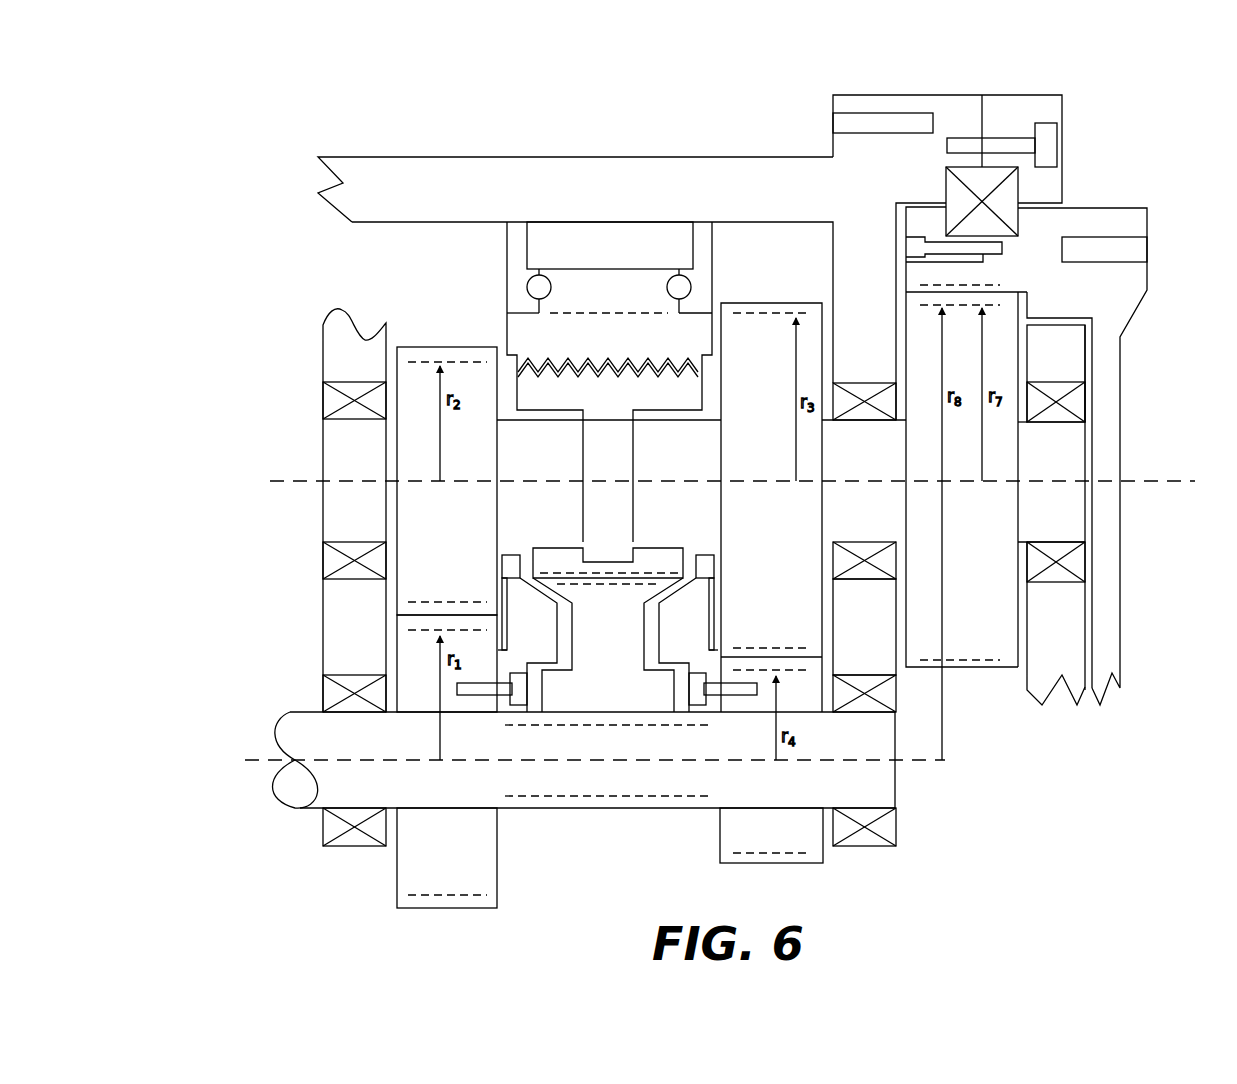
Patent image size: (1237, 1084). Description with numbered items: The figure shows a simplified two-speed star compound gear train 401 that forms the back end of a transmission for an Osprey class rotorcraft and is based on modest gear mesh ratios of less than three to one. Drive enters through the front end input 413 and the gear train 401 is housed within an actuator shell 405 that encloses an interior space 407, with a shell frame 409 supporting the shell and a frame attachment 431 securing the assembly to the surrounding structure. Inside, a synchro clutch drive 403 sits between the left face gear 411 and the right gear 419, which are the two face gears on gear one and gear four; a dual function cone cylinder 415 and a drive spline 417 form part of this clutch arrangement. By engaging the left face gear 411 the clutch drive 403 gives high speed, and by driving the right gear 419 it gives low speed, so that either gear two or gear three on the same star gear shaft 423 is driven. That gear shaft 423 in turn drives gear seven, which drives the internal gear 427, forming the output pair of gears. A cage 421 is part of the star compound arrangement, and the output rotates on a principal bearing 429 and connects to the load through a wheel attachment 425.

The simplified 2-speed star compound gear train 401 is at (240, 108).
The clutch drive 403 is at (610, 283).
The actuator shell 405 is at (362, 157).
The interior space 407 is at (313, 218).
The shell frame 409 is at (323, 357).
The left face gear 411 is at (502, 568).
The front end input 413 is at (276, 733).
The dual function cone cylinder 415 is at (632, 641).
The drive spline 417 is at (618, 727).
The right gear 419 is at (722, 565).
The cage 421 is at (1088, 622).
The gear shaft 423 is at (1149, 479).
The wheel attachment 425 is at (1150, 250).
The internal gear 427 is at (1012, 287).
The principal bearing 429 is at (946, 193).
The frame attachment 431 is at (833, 122).